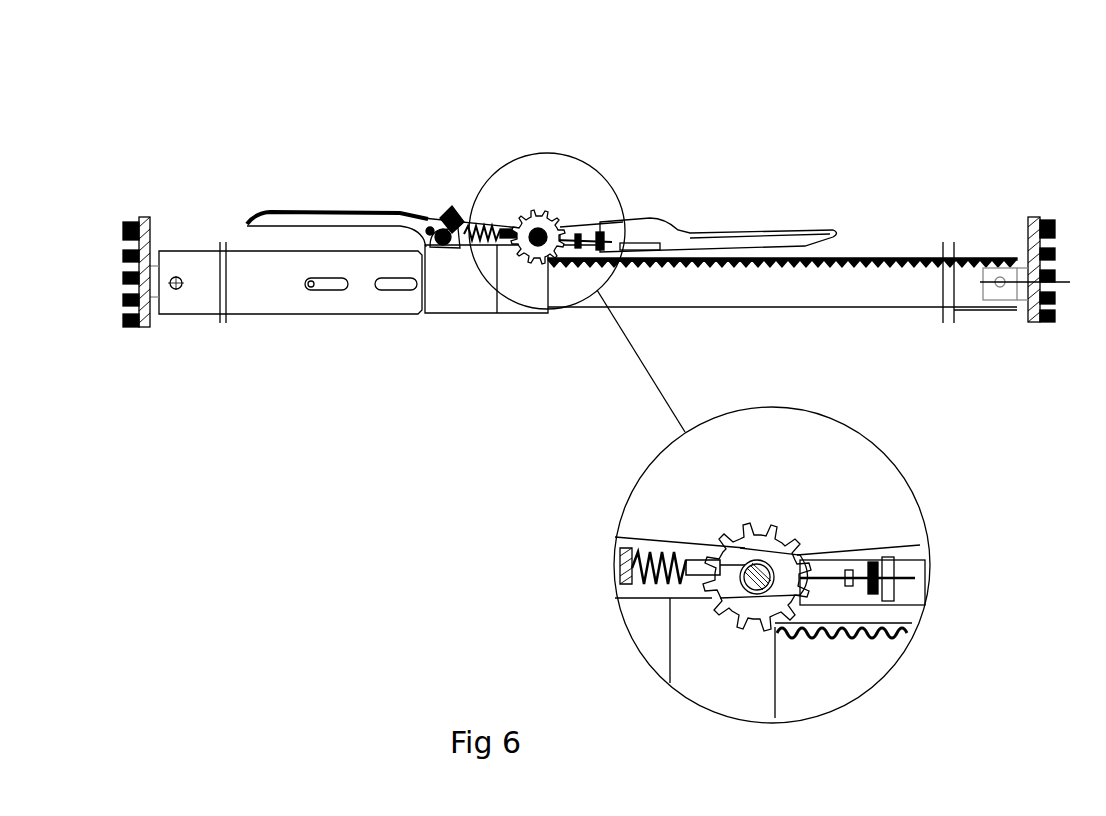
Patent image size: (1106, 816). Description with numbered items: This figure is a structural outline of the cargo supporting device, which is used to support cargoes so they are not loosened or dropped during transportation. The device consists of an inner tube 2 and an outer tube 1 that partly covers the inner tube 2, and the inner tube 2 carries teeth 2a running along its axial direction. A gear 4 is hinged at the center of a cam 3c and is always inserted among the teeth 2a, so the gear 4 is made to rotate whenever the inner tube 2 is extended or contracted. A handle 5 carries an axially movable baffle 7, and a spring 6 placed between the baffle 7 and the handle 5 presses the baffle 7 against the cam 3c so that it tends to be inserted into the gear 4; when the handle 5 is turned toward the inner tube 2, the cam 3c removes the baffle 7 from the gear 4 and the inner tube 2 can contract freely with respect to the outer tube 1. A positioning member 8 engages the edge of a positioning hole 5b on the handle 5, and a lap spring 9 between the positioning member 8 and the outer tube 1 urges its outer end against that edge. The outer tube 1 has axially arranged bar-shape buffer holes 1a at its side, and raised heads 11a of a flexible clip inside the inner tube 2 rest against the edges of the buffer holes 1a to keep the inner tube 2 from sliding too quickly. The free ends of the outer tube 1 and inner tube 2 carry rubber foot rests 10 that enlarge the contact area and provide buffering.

The outer tube 1 is at (243, 293).
The buffer holes 1a is at (345, 290).
The raised heads 11a is at (317, 289).
The inner tube 2 is at (907, 288).
The teeth 2a is at (890, 257).
The cam 3c is at (806, 545).
The gear 4 is at (568, 213).
The handle 5 is at (290, 215).
The positioning hole 5b is at (425, 226).
The spring 6 is at (472, 225).
The baffle 7 is at (520, 225).
The positioning member 8 is at (451, 214).
The lap spring 9 is at (431, 218).
The foot rests 10 is at (147, 217).